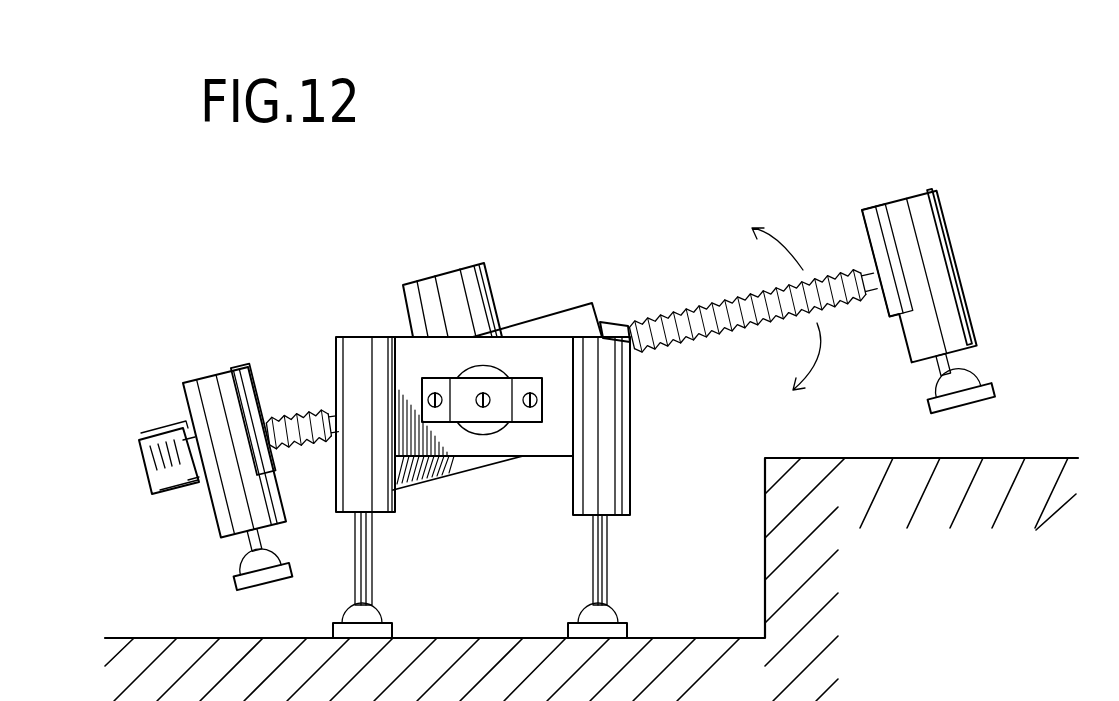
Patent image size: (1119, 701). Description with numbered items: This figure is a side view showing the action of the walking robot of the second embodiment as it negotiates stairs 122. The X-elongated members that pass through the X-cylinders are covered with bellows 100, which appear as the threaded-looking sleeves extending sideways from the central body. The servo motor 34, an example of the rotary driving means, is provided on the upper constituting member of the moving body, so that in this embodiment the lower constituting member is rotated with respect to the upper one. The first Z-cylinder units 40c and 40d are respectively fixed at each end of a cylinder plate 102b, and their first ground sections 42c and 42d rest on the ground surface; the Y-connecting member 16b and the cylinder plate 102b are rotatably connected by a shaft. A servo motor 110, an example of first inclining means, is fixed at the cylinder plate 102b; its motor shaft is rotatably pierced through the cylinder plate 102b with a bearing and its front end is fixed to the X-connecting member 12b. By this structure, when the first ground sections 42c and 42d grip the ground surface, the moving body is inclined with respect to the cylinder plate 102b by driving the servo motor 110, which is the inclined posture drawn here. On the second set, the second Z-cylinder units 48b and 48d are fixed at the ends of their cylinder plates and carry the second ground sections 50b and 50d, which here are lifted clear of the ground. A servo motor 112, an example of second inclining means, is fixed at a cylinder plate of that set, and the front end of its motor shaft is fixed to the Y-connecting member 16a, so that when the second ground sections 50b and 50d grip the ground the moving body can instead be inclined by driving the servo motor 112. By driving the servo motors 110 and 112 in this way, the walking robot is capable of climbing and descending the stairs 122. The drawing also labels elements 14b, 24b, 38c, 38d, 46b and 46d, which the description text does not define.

The X-connecting member 12b is at (568, 320).
The leg actuator cylinder 14b is at (875, 280).
The Y-connecting member 16a is at (247, 367).
The Y-connecting member 16b is at (864, 208).
The hub joint 24b is at (628, 323).
The servo motor 34 is at (487, 290).
The support rod 38c is at (358, 590).
The support rod 38d is at (610, 580).
The first Z-cylinder unit 40c is at (352, 340).
The first Z-cylinder unit 40d is at (613, 490).
The first ground section 42c is at (388, 623).
The first ground section 42d is at (568, 627).
The foot rod 46b is at (253, 542).
The foot rod 46d is at (955, 367).
The second Z-cylinder unit 48b is at (203, 378).
The second Z-cylinder unit 48d is at (940, 270).
The second ground section 50b is at (240, 588).
The second ground section 50d is at (963, 417).
The bellows 100 is at (297, 413).
The cylinder plate 102b is at (550, 448).
The servo motor 110 is at (482, 423).
The servo motor 112 is at (150, 438).
The stairs 122 is at (793, 450).